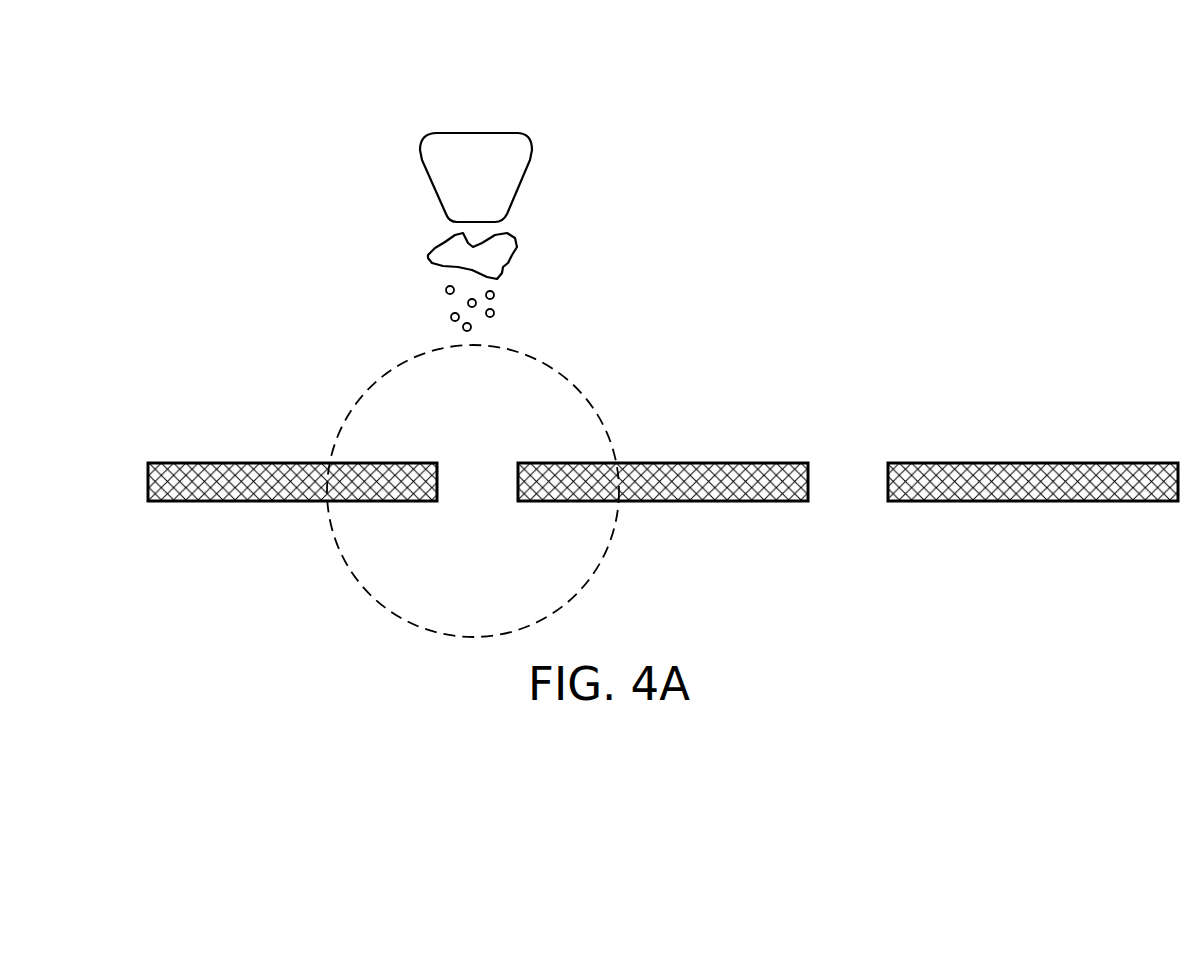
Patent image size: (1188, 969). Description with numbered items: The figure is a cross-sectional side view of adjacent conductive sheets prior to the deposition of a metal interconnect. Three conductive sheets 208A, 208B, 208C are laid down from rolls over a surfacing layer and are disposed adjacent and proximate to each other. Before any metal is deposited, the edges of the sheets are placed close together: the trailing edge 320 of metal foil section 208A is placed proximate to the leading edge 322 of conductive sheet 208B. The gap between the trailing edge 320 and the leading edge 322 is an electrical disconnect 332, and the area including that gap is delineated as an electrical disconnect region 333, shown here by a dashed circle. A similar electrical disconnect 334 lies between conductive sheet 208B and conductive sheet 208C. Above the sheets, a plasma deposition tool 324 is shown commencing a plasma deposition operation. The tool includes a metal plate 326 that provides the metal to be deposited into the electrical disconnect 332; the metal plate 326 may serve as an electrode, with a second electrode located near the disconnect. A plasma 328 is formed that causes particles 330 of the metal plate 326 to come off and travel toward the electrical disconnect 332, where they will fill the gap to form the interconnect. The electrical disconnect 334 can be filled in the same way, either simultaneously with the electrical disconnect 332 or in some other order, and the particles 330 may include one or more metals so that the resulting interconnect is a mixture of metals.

The conductive sheet 208A is at (272, 501).
The conductive sheet 208B is at (750, 502).
The conductive sheet 208C is at (1015, 502).
The trailing edge 320 is at (438, 455).
The leading edge 322 is at (521, 453).
The plasma deposition tool 324 is at (460, 108).
The metal plate 326 is at (530, 160).
The plasma 328 is at (517, 238).
The particles 330 is at (500, 283).
The electrical disconnect 332 is at (481, 505).
The electrical disconnect region 333 is at (614, 407).
The electrical disconnect 334 is at (833, 505).